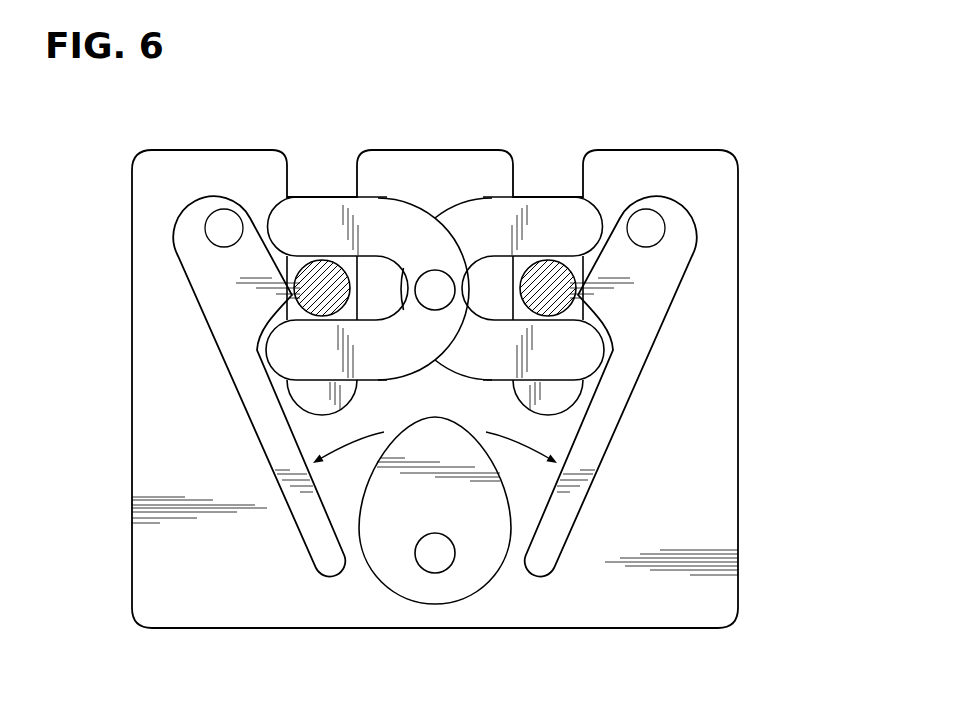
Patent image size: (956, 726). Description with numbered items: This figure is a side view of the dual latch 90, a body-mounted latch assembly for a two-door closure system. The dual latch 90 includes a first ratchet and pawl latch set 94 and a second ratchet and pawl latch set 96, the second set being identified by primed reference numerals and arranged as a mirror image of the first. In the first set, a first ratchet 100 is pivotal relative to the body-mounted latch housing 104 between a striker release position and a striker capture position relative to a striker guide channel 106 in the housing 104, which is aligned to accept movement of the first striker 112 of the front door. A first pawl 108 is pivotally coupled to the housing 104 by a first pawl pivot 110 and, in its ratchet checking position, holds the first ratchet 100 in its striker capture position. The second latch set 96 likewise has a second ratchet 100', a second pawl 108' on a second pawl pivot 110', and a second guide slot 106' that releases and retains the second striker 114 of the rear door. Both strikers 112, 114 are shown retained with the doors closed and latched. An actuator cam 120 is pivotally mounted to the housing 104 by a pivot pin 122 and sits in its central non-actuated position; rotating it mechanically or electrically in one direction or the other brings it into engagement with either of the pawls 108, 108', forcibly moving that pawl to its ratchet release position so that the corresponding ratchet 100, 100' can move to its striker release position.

The dual latch 90 is at (431, 102).
The first ratchet and pawl latch set 94 is at (212, 340).
The second ratchet and pawl latch set 96 is at (663, 340).
The first ratchet 100 is at (398, 248).
The second ratchet 100' is at (451, 246).
The body-mounted latch housing 104 is at (183, 474).
The striker guide channel 106 is at (325, 258).
The second striker guide channel 106' is at (549, 240).
The first pawl 108 is at (236, 409).
The second pawl 108' is at (679, 415).
The first pawl pivot 110 is at (211, 175).
The second pawl pivot 110' is at (663, 175).
The first striker 112 is at (320, 284).
The second striker 114 is at (550, 285).
The actuator cam 120 is at (421, 539).
The pivot pin 122 is at (438, 552).